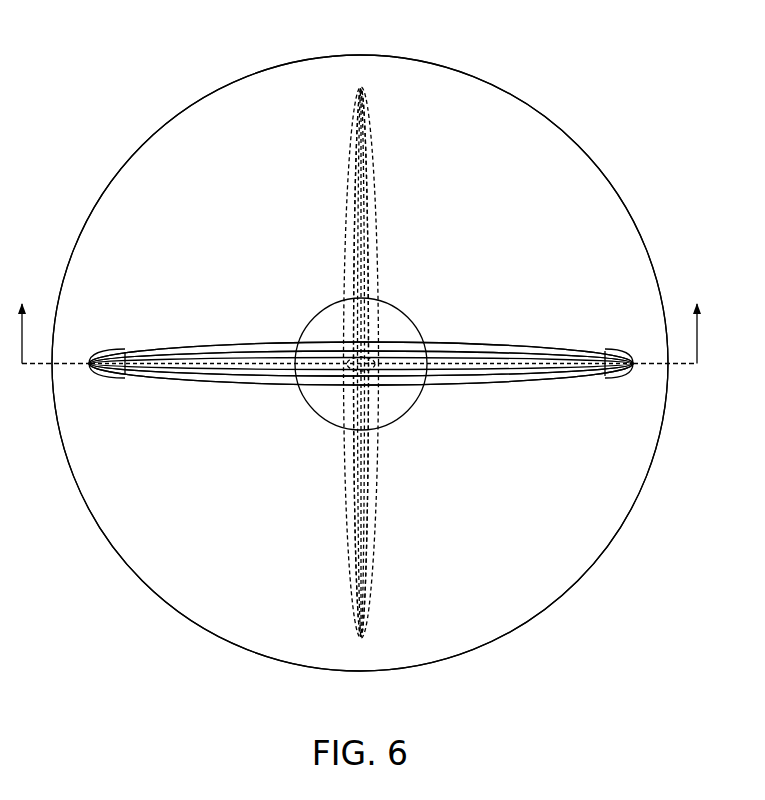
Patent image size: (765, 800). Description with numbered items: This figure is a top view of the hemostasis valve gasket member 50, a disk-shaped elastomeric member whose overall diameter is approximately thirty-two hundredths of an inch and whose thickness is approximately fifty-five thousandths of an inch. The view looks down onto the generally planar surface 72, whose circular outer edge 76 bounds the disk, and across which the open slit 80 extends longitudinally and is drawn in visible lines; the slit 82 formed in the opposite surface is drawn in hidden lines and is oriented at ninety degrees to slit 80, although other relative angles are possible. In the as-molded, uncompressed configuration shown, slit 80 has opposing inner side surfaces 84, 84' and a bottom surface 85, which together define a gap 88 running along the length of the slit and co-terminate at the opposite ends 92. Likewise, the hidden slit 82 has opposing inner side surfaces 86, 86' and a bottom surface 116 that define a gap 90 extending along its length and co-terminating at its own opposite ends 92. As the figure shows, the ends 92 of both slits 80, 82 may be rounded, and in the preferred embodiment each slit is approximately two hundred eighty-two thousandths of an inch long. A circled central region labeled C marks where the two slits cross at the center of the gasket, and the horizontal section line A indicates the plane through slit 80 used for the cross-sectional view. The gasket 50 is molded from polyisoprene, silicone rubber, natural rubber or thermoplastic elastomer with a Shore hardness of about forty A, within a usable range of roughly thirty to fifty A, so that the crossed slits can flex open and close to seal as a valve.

The hemostasis valve gasket member 50 is at (140, 41).
The surface 72 is at (290, 89).
The outer ring 76 is at (101, 196).
The slit 80 is at (185, 386).
The slit 82 is at (381, 474).
The inner side surface 84 is at (361, 327).
The inner side surface 84' is at (361, 404).
The bottom surface 85 is at (251, 365).
The inner side surface 86 is at (400, 363).
The inner side surface 86' is at (321, 363).
The gap 88 is at (568, 357).
The gap 90 is at (368, 562).
The ends 92 is at (363, 85).
The bottom surface 116 is at (352, 491).
The center region C is at (391, 305).
The section line A- A is at (360, 320).